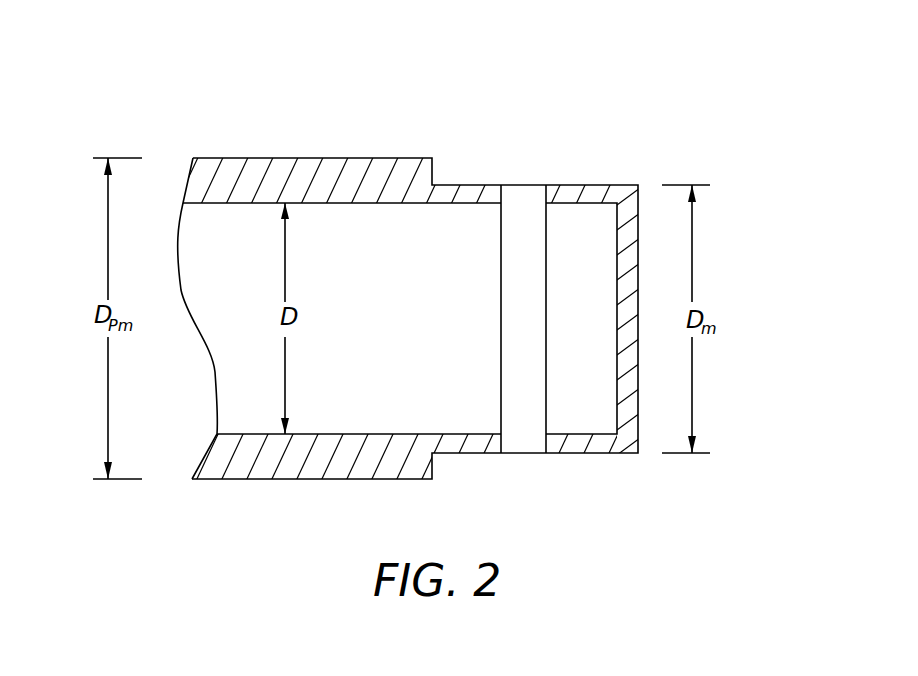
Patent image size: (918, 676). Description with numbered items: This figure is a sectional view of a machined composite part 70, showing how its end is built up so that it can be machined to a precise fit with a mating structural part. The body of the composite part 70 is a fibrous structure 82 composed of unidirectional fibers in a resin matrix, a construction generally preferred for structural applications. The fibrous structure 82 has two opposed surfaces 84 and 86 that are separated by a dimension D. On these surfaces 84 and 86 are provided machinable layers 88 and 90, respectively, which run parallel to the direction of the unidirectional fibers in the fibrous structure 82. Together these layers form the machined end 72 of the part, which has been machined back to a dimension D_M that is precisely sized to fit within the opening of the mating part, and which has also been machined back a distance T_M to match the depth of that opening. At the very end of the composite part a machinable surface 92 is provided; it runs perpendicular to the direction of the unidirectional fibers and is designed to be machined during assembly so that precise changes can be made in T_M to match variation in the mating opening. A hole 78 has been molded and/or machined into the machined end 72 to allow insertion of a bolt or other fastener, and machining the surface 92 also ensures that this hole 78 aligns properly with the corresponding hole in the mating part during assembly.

The composite part 70 is at (410, 284).
The machined end 72 is at (468, 283).
The hole 78 is at (522, 433).
The fibrous structure 82 is at (331, 410).
The surface 84 is at (263, 203).
The surface 86 is at (237, 434).
The machinable layer 88 is at (347, 172).
The machinable layer 90 is at (370, 465).
The machinable surface 92 is at (627, 208).